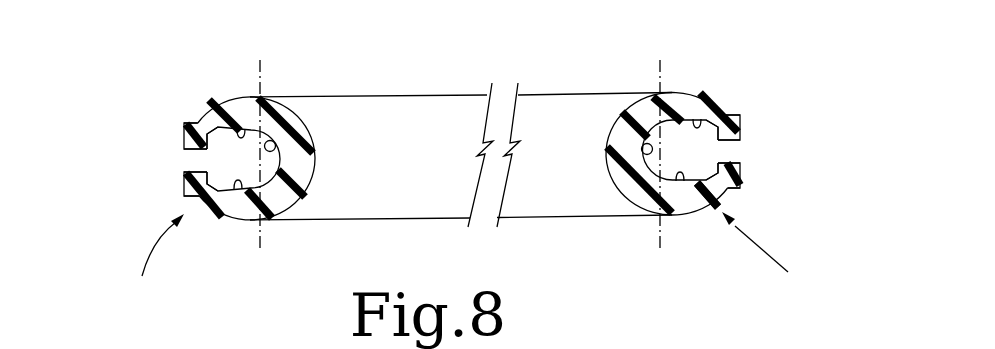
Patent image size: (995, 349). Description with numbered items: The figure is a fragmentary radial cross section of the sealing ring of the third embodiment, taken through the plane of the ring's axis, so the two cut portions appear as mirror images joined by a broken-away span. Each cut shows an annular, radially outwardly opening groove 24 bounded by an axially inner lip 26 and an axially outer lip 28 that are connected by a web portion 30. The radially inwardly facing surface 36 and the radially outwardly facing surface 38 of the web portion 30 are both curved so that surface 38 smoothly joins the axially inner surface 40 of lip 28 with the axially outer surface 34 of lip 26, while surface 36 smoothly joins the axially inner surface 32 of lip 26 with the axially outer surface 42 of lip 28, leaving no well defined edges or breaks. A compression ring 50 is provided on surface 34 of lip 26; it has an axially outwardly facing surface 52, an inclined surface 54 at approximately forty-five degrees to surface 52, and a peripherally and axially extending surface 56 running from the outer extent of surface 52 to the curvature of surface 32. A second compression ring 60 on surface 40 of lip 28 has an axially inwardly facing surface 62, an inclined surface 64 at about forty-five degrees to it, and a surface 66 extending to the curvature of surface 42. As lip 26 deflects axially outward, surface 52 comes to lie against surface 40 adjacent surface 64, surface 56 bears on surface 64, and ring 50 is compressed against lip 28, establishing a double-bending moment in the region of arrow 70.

The groove 24 is at (150, 161).
The axially inner lip 26 is at (234, 205).
The axially outer lip 28 is at (228, 103).
The web portion 30 is at (302, 173).
The axially inner surface of lip 26 32 is at (218, 221).
The axially outer surface of lip 26 34 is at (240, 190).
The radially inwardly facing surface 36 is at (315, 155).
The radially outwardly facing surface 38 is at (275, 142).
The axially inner surface of lip 28 40 is at (243, 130).
The axially outer surface of lip 28 42 is at (251, 99).
The compression ring 50 is at (187, 198).
The axially outwardly facing surface 52 is at (188, 165).
The axially outwardly and radially inwardly facing surface 54 is at (200, 192).
The peripherally and axially extending surface 56 is at (187, 188).
The compression ring 60 is at (200, 120).
The axially inwardly facing surface 62 is at (186, 151).
The radially and axially inwardly facing surface 64 is at (209, 137).
The peripherally and axially extending surface 66 is at (185, 130).
The arrow 70 is at (471, 257).